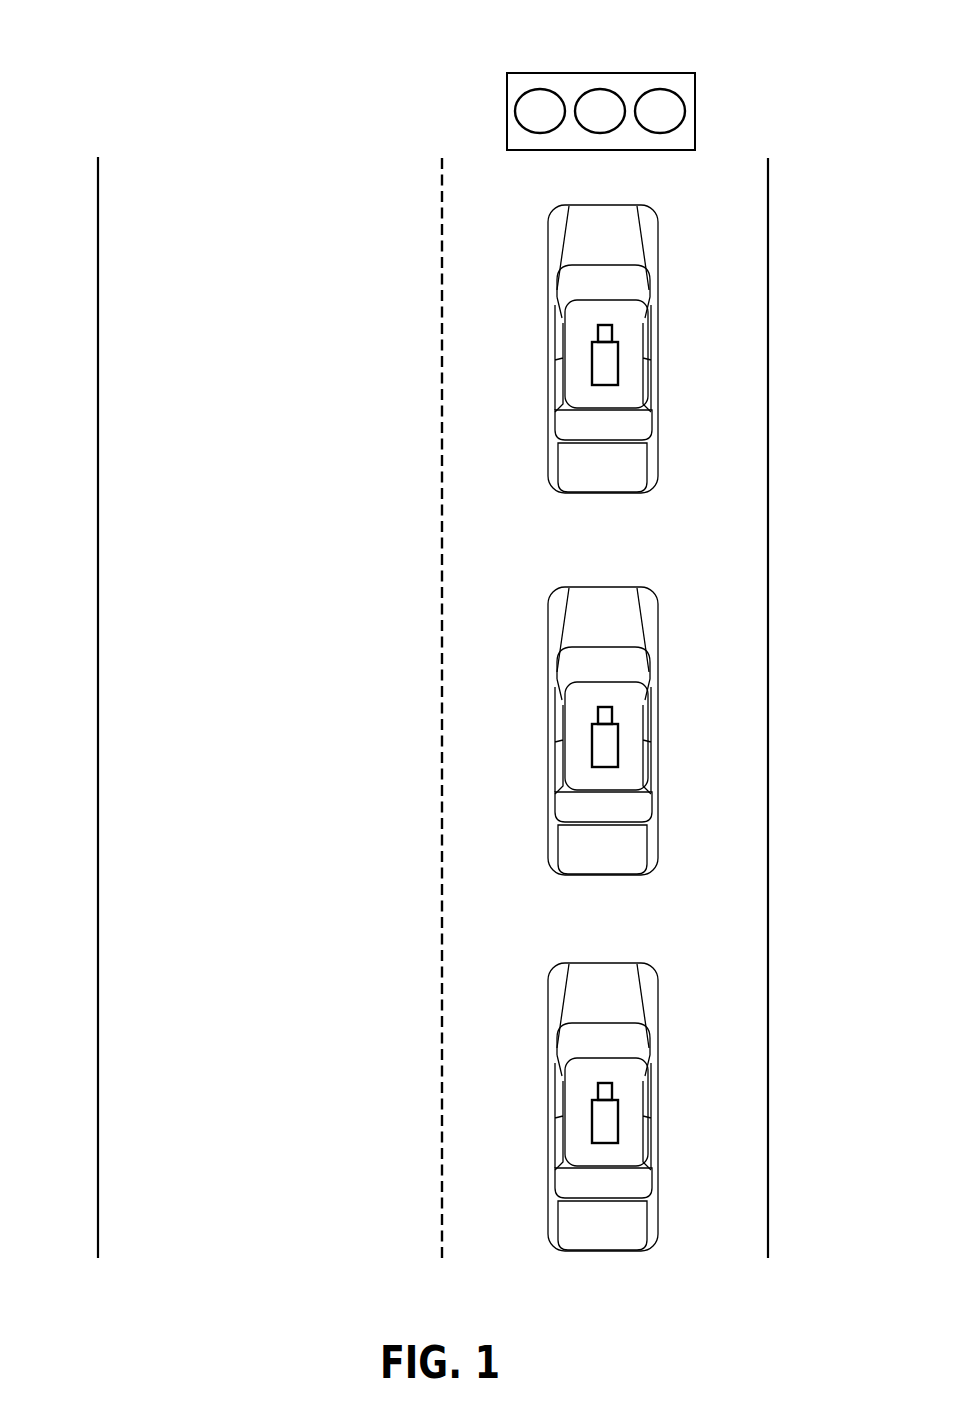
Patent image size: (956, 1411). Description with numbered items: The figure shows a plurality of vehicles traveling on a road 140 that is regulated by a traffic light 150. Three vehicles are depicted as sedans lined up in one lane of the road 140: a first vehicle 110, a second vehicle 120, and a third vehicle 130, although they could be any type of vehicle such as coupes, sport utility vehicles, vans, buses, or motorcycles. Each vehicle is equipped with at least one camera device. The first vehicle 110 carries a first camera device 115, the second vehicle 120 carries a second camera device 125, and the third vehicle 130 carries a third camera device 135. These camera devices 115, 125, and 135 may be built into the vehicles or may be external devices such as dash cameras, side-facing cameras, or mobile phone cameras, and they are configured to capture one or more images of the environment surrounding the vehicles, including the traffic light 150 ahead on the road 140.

The first vehicle 110 is at (567, 349).
The first camera device 115 is at (592, 358).
The second vehicle 120 is at (570, 731).
The second camera device 125 is at (593, 737).
The third vehicle 130 is at (570, 1107).
The third camera device 135 is at (592, 1113).
The road 140 is at (273, 232).
The traffic light 150 is at (696, 110).